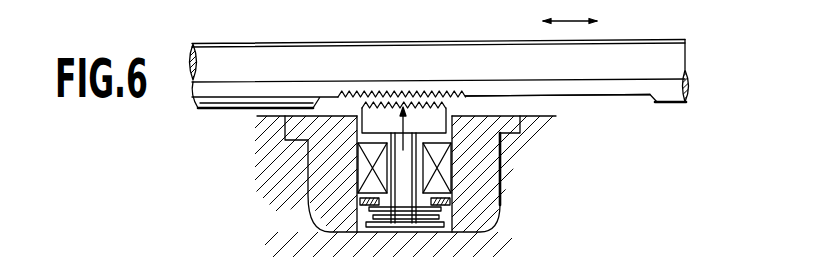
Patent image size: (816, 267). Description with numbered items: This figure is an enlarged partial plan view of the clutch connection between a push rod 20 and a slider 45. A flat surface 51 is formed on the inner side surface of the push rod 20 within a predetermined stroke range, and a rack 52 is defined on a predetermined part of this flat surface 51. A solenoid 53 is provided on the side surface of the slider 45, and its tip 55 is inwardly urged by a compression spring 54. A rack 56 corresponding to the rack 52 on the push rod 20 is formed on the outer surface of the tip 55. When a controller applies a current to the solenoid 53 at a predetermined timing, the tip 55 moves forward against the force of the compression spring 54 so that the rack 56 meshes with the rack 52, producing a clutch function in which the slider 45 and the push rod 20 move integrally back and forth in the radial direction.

The push rod 20 is at (292, 58).
The rack 52 is at (424, 90).
The flat surface 51 is at (624, 97).
The slider 45 is at (285, 207).
The rack 56 is at (437, 106).
The solenoid 53 is at (462, 180).
The tip 55 is at (372, 122).
The compression spring 54 is at (357, 217).